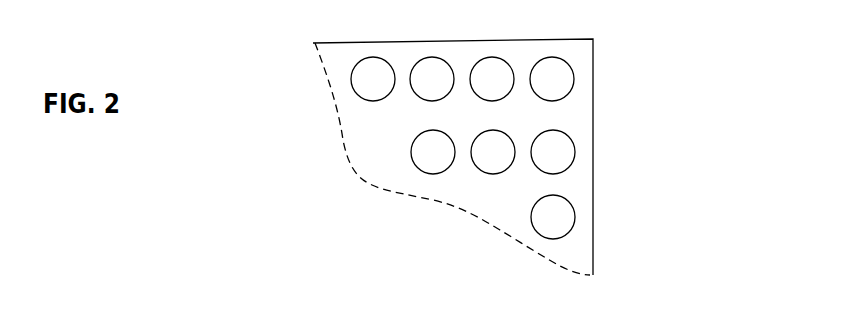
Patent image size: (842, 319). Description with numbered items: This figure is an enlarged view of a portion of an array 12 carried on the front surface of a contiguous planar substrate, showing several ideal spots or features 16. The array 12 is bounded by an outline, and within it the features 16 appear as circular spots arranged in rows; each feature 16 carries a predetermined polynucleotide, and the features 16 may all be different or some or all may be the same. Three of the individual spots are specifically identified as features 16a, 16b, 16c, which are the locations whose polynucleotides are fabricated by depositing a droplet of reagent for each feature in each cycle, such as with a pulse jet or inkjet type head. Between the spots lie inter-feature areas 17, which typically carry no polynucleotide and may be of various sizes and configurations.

The array 12 is at (583, 247).
The feature 16 is at (572, 203).
The feature 16a is at (413, 153).
The feature 16b is at (493, 150).
The feature 16c is at (552, 150).
The inter-feature area 17 is at (462, 70).